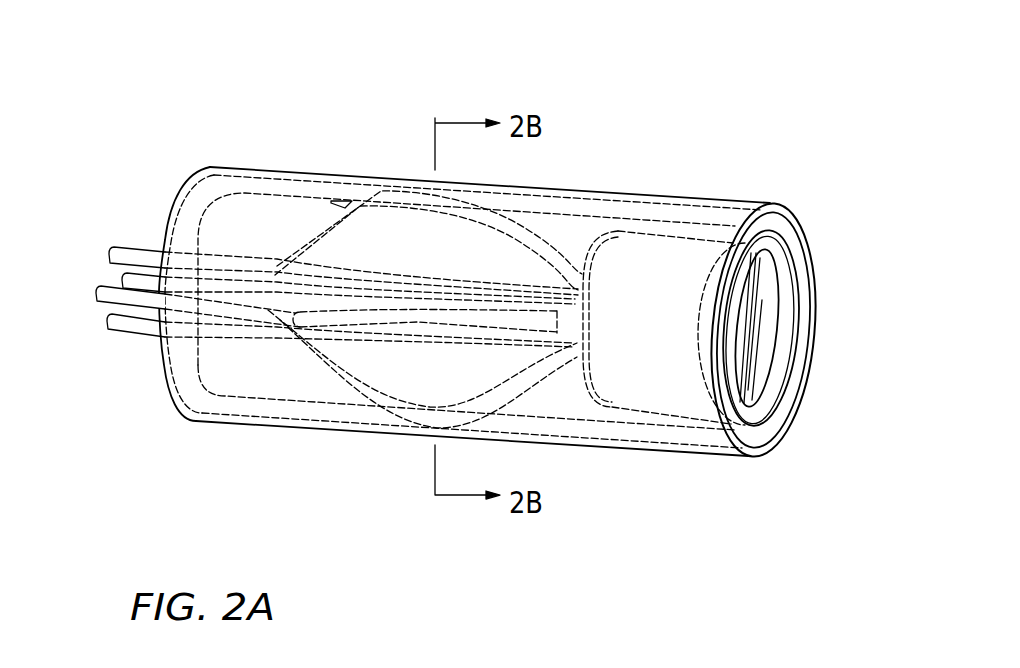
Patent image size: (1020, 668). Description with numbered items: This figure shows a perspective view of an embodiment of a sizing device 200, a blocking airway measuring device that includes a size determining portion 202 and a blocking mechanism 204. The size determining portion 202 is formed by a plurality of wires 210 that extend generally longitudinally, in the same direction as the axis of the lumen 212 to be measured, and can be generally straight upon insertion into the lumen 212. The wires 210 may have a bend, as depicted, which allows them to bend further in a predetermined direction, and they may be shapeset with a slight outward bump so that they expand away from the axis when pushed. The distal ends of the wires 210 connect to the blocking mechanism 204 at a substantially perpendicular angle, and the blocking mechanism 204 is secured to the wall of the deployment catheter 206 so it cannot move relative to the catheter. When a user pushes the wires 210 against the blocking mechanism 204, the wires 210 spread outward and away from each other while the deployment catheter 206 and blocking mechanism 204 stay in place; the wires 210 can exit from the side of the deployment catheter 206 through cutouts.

The sizing device 200 is at (639, 90).
The size determining portion 202 is at (88, 217).
The blocking mechanism 204 is at (770, 335).
The deployment catheter 206 is at (776, 206).
The wires 210 is at (268, 290).
The lumen 212 is at (681, 197).